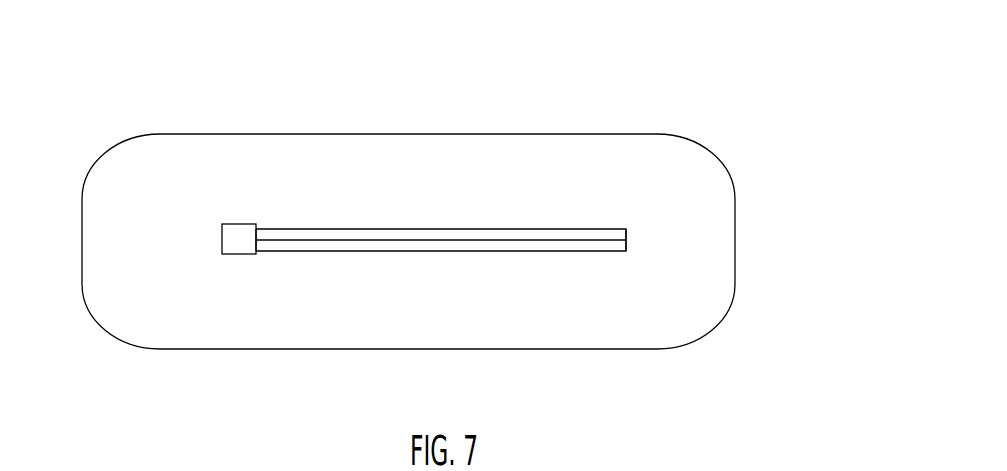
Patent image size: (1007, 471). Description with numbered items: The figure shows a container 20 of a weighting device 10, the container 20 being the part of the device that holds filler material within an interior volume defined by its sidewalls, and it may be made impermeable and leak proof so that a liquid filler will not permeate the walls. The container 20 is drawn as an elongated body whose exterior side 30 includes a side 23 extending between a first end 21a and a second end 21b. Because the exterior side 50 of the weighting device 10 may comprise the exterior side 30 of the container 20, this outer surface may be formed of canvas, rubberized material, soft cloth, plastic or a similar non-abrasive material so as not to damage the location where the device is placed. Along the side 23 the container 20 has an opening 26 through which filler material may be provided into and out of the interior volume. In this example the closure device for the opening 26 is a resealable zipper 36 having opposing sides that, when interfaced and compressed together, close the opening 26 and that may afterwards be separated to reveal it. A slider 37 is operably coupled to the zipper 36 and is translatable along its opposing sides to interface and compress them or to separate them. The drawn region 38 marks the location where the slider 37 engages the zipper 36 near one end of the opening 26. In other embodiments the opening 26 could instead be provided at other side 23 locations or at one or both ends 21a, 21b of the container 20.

The weighting device 10 is at (608, 103).
The container 20 is at (690, 140).
The end 21a is at (120, 335).
The end 21b is at (740, 270).
The side 23 is at (265, 303).
The opening 26 is at (610, 252).
The exterior side of the container 30 is at (352, 157).
The resealable zipper 36 is at (413, 229).
The slider 37 is at (240, 224).
The junction 38 is at (268, 222).
The exterior side of the weighting device 50 is at (688, 307).